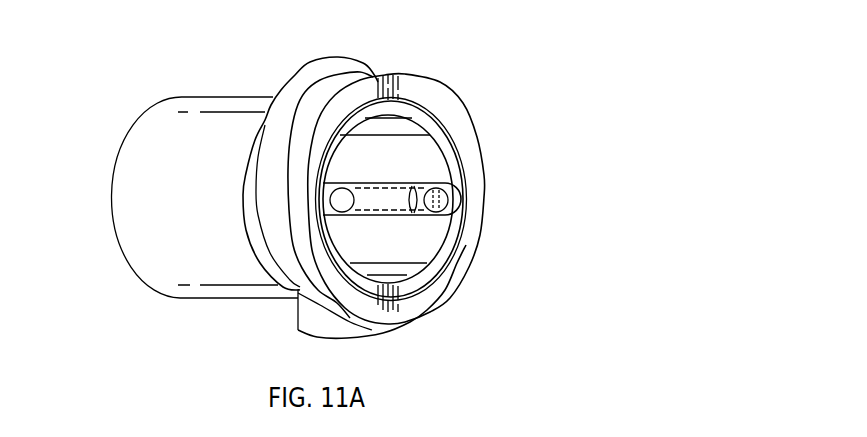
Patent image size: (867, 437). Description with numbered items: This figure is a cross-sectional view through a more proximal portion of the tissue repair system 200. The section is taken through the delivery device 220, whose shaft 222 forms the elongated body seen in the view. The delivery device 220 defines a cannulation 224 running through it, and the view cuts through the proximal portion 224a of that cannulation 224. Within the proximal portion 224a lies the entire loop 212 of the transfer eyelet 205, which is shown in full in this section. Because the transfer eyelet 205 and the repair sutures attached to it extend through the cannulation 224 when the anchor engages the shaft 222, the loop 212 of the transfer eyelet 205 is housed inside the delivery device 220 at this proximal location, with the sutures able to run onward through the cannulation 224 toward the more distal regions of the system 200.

The tissue repair system 200 is at (132, 58).
The shaft 222 is at (155, 244).
The cannulation 224 is at (352, 157).
The proximal portion of the cannulation 224a is at (395, 248).
The delivery device 220 is at (425, 115).
The loop 212 is at (387, 197).
The transfer eyelet 205 is at (448, 193).